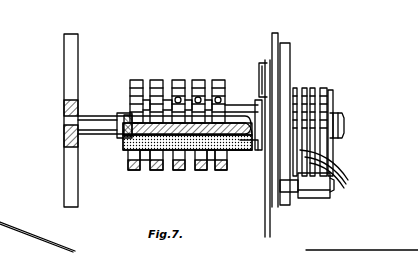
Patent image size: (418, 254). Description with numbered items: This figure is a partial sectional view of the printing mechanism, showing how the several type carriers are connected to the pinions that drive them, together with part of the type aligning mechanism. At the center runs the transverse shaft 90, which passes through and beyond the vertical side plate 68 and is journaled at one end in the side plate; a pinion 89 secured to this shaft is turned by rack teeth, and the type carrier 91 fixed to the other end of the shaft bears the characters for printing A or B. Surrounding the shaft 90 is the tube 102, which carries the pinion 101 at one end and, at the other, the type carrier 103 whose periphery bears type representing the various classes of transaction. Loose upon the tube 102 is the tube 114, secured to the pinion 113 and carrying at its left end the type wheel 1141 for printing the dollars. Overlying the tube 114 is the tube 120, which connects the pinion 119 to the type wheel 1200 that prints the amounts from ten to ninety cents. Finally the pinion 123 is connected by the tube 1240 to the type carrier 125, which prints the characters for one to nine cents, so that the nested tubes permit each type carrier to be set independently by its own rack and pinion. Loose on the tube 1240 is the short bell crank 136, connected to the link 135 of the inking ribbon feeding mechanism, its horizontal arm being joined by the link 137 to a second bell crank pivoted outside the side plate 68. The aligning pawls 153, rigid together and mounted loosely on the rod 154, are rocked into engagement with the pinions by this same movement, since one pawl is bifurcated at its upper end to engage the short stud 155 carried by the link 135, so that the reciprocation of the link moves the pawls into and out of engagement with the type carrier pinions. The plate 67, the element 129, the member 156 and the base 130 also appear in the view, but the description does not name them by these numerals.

The plate 67 is at (64, 187).
The transverse shaft 90 is at (104, 134).
The type carrier 91 is at (134, 80).
The type carrier 103 is at (155, 80).
The type wheel 1141 is at (178, 80).
The type wheel 1200 is at (198, 80).
The type carrier 125 is at (219, 80).
The tube 102 is at (180, 168).
The tube 114 is at (200, 168).
The tube 120 is at (240, 158).
The tube 1240 is at (256, 150).
The link 135 is at (257, 100).
The link 137 is at (262, 63).
The bell crank 136 is at (285, 43).
The pinion 123 is at (295, 88).
The pinion 119 is at (305, 88).
The pinion 113 is at (313, 88).
The pinion 101 is at (324, 88).
The pinion 89 is at (331, 90).
The plate 68 is at (316, 198).
The stud 155 is at (290, 192).
The aligning pawls 153 is at (335, 171).
The rod 154 is at (336, 186).
The base 129 is at (330, 250).
The bar 156 is at (80, 252).
The base 130 is at (263, 249).